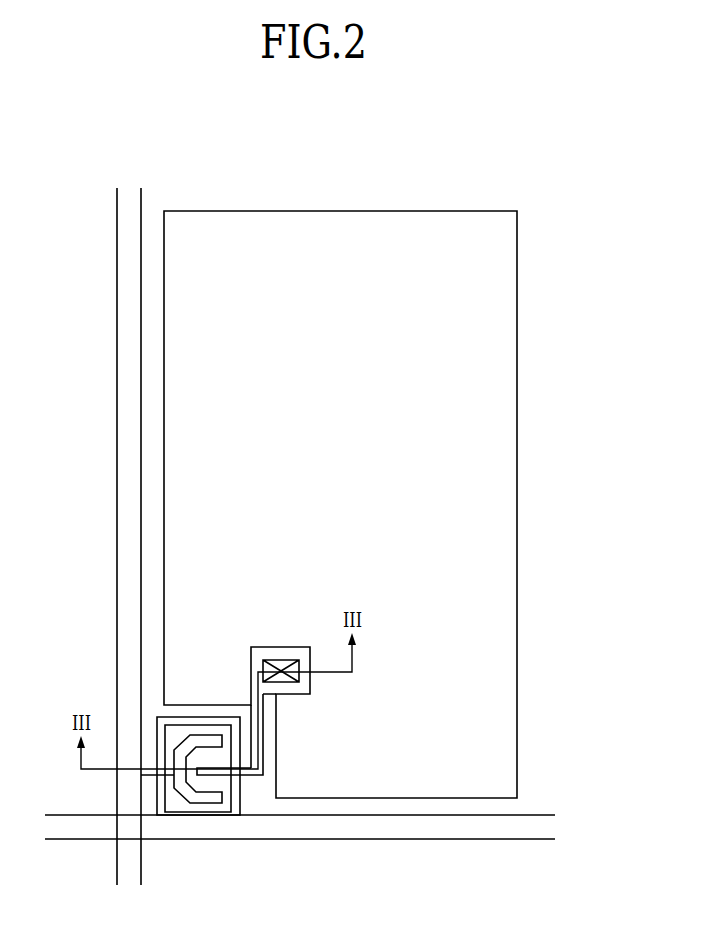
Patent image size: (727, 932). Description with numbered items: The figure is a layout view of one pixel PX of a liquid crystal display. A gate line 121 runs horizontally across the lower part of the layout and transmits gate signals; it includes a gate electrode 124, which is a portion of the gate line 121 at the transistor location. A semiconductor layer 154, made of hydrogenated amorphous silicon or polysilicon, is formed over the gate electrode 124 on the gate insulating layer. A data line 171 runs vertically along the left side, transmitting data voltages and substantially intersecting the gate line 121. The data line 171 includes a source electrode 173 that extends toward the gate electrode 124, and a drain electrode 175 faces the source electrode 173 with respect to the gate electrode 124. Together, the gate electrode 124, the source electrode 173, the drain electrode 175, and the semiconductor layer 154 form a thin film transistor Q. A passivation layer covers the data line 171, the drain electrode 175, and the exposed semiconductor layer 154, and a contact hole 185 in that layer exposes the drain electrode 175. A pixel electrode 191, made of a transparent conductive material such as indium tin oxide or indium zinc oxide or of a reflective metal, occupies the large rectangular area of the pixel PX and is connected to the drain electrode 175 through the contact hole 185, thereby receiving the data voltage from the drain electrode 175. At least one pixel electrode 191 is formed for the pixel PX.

The data line 171 is at (117, 434).
The gate line 121 is at (372, 839).
The gate electrode 124 is at (240, 792).
The semiconductor layer 154 is at (203, 812).
The pixel electrode 191 is at (516, 434).
The drain electrode 175 is at (263, 738).
The source electrode 173 is at (206, 735).
The contact hole 185 is at (280, 660).
The pixel PX is at (418, 196).
The thin film transistor Q is at (183, 838).